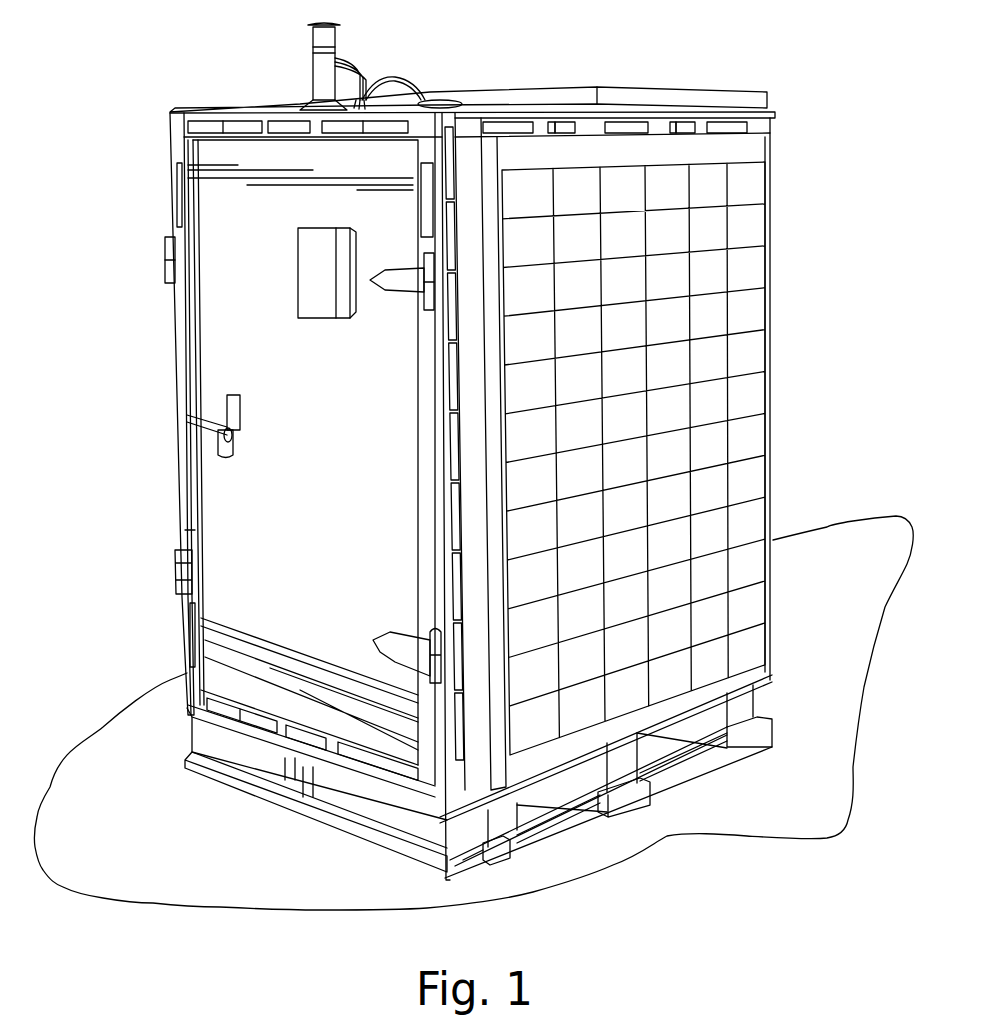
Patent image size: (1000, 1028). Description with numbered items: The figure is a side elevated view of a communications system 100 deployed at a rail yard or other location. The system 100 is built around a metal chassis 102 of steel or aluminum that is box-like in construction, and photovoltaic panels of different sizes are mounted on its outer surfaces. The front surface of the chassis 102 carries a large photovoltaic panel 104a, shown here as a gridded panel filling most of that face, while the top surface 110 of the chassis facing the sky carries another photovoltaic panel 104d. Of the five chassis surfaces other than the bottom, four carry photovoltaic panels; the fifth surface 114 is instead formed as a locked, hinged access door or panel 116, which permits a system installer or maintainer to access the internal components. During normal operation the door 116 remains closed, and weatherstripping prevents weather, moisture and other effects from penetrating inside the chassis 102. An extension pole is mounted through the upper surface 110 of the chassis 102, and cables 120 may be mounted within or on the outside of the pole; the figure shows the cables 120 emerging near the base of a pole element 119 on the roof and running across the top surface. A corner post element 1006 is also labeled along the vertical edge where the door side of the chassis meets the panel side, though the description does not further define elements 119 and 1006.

The communications system 100 is at (645, 88).
The chassis 102 is at (172, 112).
The photovoltaic panel 104a is at (745, 303).
The photovoltaic panel 104d is at (709, 97).
The top surface 110 is at (230, 113).
The fifth surface 114 is at (187, 700).
The access door or panel 116 is at (337, 458).
The exhaust pipe 119 is at (318, 38).
The cables 120 is at (350, 63).
The corner post 1006 is at (465, 148).